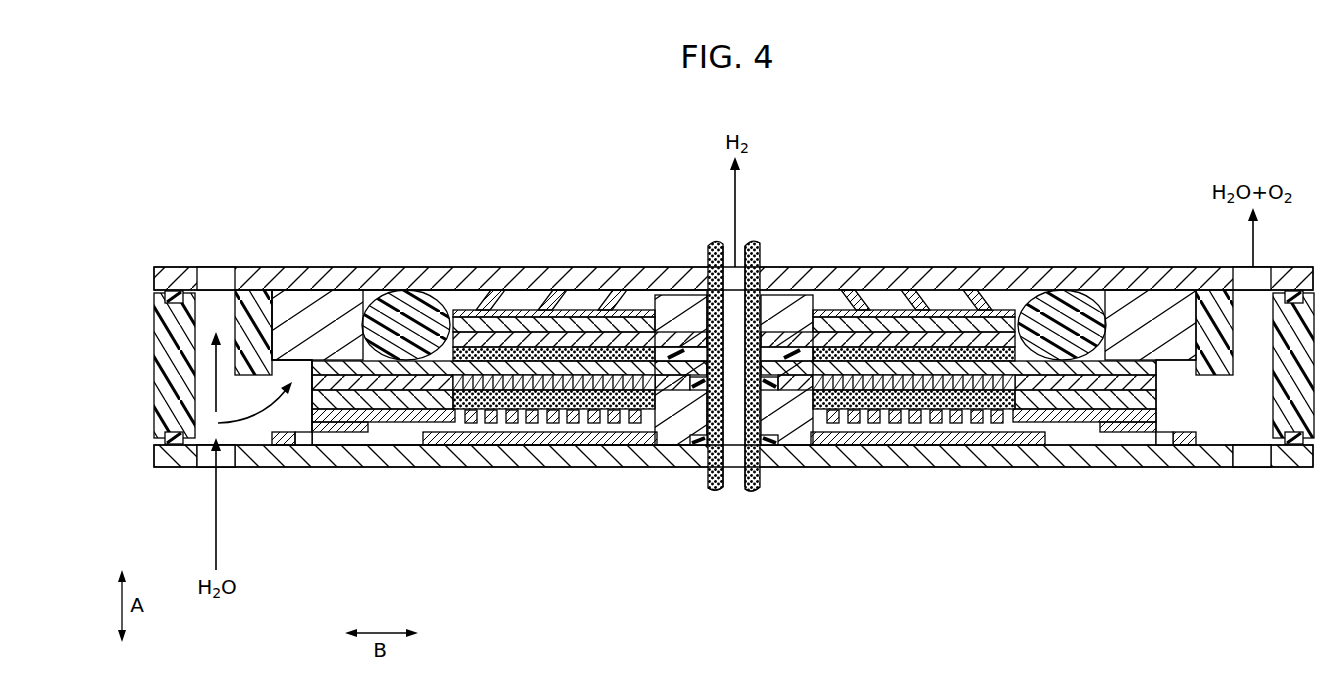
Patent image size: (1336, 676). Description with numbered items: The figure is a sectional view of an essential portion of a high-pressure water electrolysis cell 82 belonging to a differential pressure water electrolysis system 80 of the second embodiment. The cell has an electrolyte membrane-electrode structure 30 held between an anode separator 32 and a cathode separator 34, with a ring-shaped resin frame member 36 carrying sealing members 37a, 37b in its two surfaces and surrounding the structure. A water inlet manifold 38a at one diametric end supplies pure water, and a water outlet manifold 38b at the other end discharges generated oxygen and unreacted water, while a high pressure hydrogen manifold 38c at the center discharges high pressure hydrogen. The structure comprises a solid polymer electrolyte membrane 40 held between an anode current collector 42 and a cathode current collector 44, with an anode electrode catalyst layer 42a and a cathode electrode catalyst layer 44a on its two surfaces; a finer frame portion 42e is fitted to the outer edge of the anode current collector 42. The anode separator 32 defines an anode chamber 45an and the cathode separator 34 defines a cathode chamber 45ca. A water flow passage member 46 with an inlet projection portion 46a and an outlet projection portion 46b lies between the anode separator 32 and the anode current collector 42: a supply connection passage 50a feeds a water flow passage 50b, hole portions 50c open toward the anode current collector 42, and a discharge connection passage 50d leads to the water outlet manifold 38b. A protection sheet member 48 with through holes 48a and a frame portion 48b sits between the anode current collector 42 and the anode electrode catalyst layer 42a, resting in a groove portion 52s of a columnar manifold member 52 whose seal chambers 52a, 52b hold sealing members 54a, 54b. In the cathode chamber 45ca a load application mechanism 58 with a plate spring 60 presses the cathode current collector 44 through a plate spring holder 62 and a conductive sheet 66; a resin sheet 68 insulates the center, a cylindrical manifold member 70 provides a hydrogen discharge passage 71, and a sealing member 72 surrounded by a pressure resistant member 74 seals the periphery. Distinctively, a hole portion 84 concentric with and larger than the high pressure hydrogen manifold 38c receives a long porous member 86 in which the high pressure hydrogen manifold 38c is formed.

The electrolyte membrane-electrode structure 30 is at (341, 346).
The anode separator 32 is at (1290, 478).
The cathode separator 34 is at (1290, 257).
The resin frame member 36 is at (142, 408).
The sealing member 37a is at (178, 292).
The sealing member 37b is at (181, 450).
The water inlet manifold 38a is at (228, 468).
The water outlet manifold 38b is at (1268, 455).
The high pressure hydrogen manifold 38c is at (742, 470).
The solid polymer electrolyte membrane 40 is at (436, 268).
The anode current collector 42 is at (522, 415).
The anode electrode catalyst layer 42a is at (500, 378).
The frame portion 42e is at (415, 407).
The cathode current collector 44 is at (558, 300).
The cathode electrode catalyst layer 44a is at (517, 314).
The anode chamber 45an is at (304, 420).
The cathode chamber 45ca is at (599, 300).
The water flow passage member 46 is at (462, 459).
The inlet projection portion 46a is at (279, 446).
The outlet projection portion 46b is at (1188, 446).
The protection sheet member 48 is at (1083, 404).
The through holes 48a is at (997, 378).
The frame portion 48b is at (1128, 383).
The supply connection passage 50a is at (355, 437).
The water flow passage 50b is at (561, 425).
The hole portions 50c is at (600, 430).
The discharge connection passage 50d is at (1155, 437).
The manifold member 52 is at (790, 446).
The seal chamber 52a is at (703, 267).
The seal chamber 52b is at (698, 440).
The groove portion 52s is at (661, 267).
The sealing member 54a is at (690, 267).
The sealing member 54b is at (690, 446).
The load application mechanism 58 is at (938, 267).
The plate spring 60 is at (860, 267).
The plate spring holder 62 is at (897, 267).
The conductive sheet 66 is at (998, 267).
The resin sheet 68 is at (808, 267).
The manifold member 70 is at (780, 267).
The hydrogen discharge passage 71 is at (677, 275).
The sealing member 72 is at (398, 300).
The pressure resistant member 74 is at (300, 300).
The differential pressure water electrolysis system 80 is at (810, 114).
The high-pressure water electrolysis cell 82 is at (775, 114).
The hole portion 84 is at (752, 267).
The porous member 86 is at (753, 491).